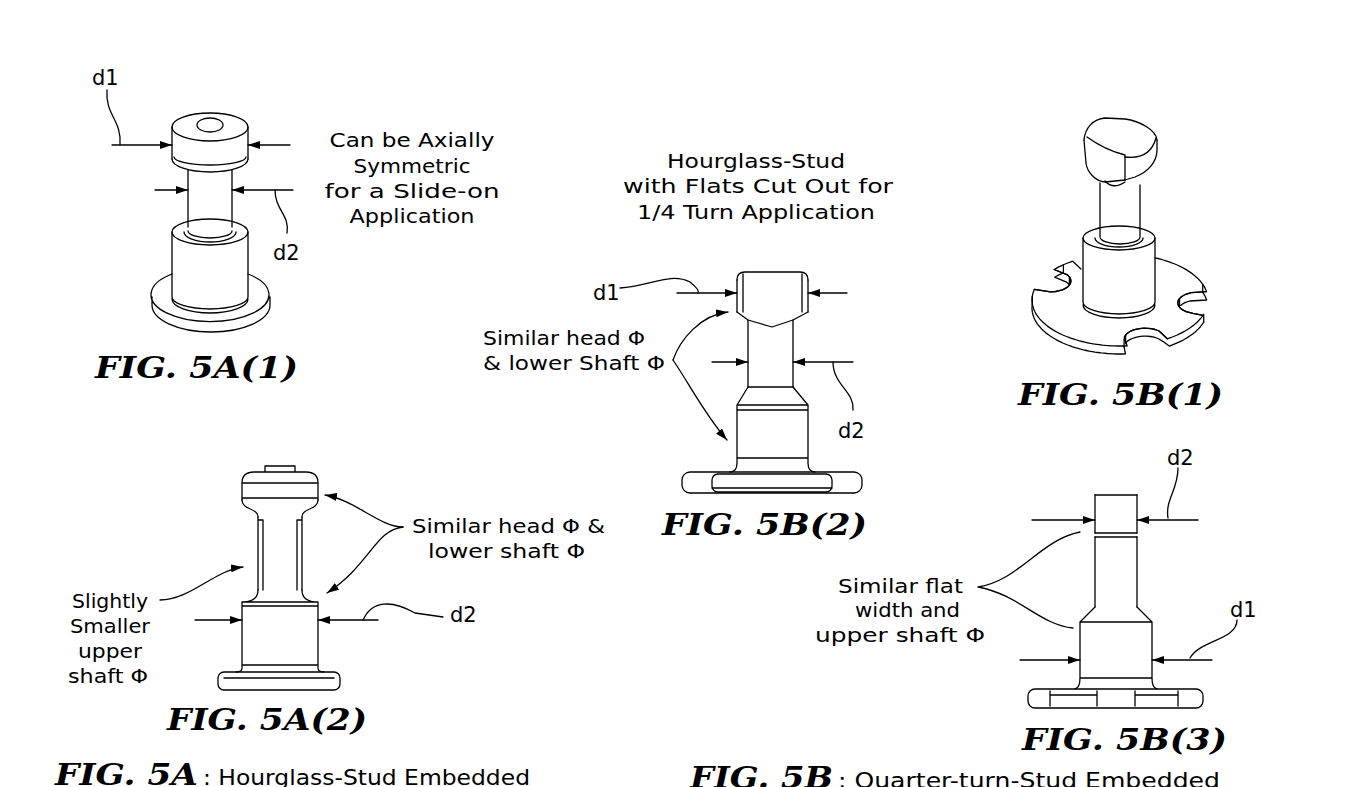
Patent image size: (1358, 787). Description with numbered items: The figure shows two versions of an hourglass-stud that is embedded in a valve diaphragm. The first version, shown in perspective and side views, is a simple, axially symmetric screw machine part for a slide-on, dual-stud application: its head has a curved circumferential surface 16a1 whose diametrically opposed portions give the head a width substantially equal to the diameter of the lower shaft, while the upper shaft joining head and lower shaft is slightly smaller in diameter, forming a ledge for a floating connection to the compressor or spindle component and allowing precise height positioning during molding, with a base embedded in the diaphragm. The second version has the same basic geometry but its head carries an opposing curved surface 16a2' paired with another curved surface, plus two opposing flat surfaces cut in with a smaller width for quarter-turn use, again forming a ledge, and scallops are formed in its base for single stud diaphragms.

The curved circumferential surface 16a1 is at (246, 103).
The opposing curved surface 16a2' is at (836, 290).